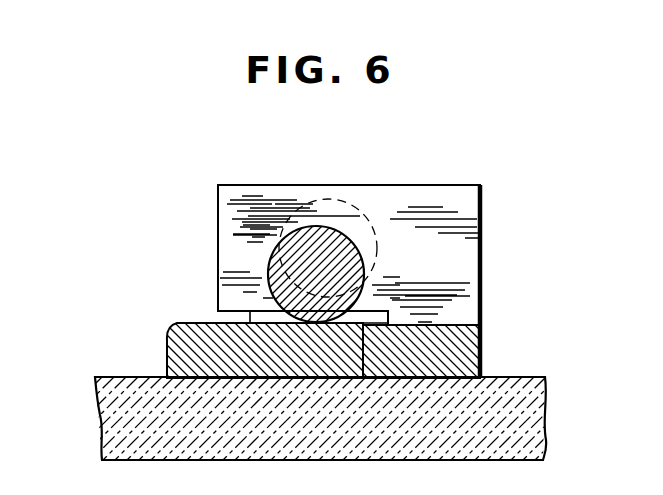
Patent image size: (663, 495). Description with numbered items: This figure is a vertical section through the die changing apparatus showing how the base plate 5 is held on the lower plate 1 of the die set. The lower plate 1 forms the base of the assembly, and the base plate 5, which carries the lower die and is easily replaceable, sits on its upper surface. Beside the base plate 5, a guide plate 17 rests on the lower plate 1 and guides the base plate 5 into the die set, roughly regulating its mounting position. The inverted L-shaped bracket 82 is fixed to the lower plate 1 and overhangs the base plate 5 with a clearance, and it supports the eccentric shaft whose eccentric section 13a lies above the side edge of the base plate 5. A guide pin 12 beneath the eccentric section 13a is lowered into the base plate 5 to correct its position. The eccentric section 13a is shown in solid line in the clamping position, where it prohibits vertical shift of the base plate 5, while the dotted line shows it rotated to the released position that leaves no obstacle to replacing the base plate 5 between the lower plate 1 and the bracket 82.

The lower plate 1 is at (517, 391).
The base plate 5 is at (188, 345).
The guide pin 12 is at (258, 318).
The eccentric section 13a is at (338, 198).
The guide plate 17 is at (460, 343).
The bracket 82 is at (455, 196).